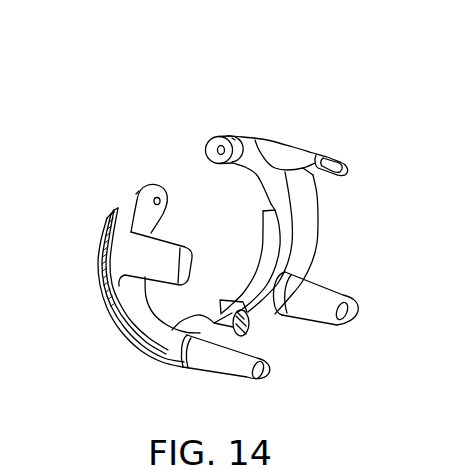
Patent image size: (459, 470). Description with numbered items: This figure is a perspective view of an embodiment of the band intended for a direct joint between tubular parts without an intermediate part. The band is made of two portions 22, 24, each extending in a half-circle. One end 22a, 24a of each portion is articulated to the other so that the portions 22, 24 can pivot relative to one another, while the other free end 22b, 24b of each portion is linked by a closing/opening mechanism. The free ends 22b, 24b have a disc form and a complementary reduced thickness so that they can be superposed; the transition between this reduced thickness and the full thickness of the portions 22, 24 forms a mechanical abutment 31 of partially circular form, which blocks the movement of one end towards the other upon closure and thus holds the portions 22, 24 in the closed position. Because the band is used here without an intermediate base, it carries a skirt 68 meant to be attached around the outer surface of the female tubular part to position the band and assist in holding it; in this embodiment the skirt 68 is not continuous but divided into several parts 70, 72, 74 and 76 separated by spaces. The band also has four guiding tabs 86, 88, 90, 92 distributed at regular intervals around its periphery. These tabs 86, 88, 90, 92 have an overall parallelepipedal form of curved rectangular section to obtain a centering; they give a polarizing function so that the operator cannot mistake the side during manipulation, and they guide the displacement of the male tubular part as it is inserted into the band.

The portion 22 is at (300, 173).
The portion 24 is at (148, 333).
The end of portion 22a is at (250, 327).
The free end of portion 22b is at (148, 188).
The end of portion 24a is at (245, 310).
The free end of portion 24b is at (220, 137).
The mechanical abutment 31 is at (137, 192).
The skirt 68 is at (112, 220).
The skirt part 70 is at (272, 200).
The skirt part 72 is at (270, 250).
The skirt part 74 is at (188, 328).
The skirt part 76 is at (100, 242).
The guiding tab 86 is at (307, 153).
The guiding tab 88 is at (330, 297).
The guiding tab 90 is at (230, 363).
The guiding tab 92 is at (143, 267).